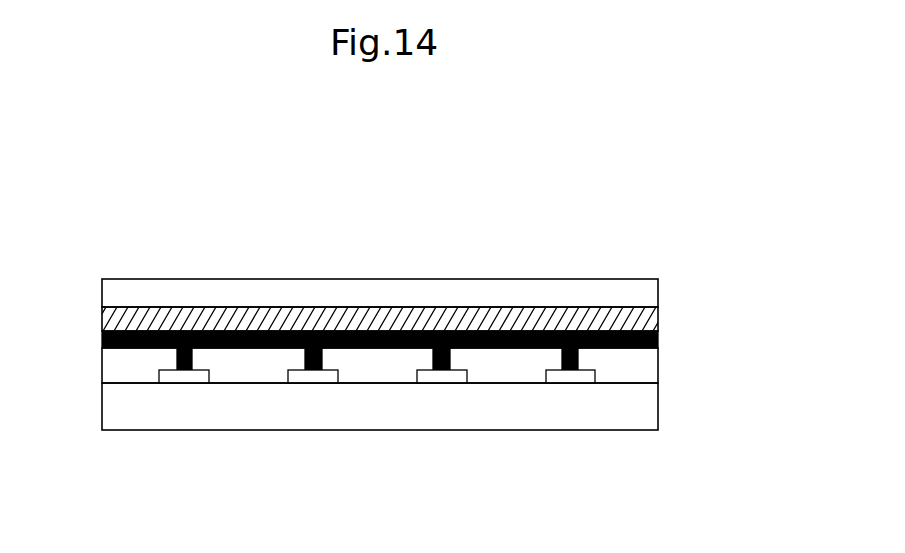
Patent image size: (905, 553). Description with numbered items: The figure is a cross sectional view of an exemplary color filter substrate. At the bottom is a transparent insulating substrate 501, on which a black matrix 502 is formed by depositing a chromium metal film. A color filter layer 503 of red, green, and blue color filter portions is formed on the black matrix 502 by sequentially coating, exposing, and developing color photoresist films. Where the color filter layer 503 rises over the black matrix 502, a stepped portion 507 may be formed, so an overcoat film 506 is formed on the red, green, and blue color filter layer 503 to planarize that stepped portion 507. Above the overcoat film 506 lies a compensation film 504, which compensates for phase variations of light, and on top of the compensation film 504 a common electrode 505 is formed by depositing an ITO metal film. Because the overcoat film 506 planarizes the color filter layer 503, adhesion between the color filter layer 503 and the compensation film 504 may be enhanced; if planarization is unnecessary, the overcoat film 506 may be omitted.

The transparent insulating substrate 501 is at (658, 408).
The black matrix 502 is at (570, 381).
The color filter layer 503 is at (650, 361).
The compensation film 504 is at (658, 318).
The common electrode 505 is at (628, 290).
The overcoat film 506 is at (658, 340).
The stepped portion 507 is at (177, 360).